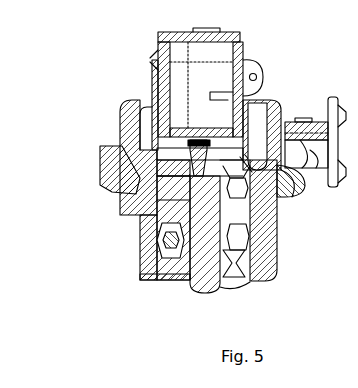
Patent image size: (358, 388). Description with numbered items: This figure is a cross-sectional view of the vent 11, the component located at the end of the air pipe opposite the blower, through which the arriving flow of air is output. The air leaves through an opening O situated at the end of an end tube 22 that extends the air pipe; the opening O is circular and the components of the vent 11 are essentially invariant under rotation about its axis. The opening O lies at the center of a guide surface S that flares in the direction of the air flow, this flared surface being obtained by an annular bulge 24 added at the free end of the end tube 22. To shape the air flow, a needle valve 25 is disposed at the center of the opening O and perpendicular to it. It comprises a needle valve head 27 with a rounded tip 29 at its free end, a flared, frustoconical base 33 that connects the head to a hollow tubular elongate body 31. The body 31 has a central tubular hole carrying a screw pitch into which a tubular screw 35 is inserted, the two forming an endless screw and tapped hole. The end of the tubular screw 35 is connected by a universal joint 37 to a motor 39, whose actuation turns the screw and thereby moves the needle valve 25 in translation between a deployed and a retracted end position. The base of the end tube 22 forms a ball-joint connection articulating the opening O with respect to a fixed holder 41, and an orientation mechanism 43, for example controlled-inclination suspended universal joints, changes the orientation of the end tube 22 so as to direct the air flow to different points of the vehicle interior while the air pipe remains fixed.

The vent 11 is at (55, 122).
The end tube 22 is at (280, 222).
The annular bulge 24 is at (270, 274).
The needle valve 25 is at (70, 278).
The needle valve head 27 is at (115, 308).
The tip 29 is at (188, 266).
The elongate body 31 is at (142, 274).
The flared base 33 is at (174, 268).
The tubular screw 35 is at (143, 235).
The universal joint 37 is at (133, 205).
The motor 39 is at (157, 42).
The fixed holder 41 is at (100, 165).
The orientation mechanism 43 is at (301, 97).
The guide surface S is at (246, 287).
The opening O is at (229, 296).